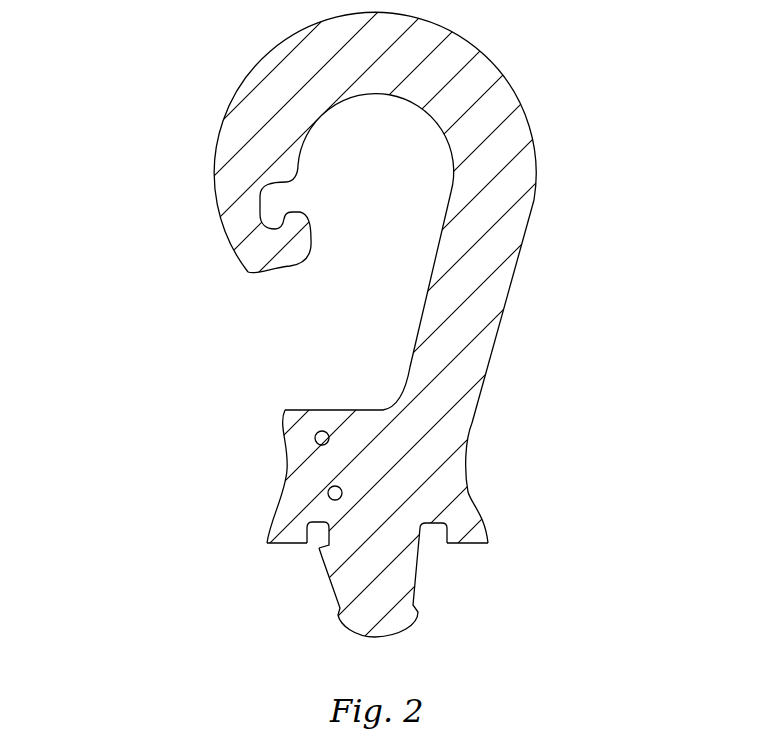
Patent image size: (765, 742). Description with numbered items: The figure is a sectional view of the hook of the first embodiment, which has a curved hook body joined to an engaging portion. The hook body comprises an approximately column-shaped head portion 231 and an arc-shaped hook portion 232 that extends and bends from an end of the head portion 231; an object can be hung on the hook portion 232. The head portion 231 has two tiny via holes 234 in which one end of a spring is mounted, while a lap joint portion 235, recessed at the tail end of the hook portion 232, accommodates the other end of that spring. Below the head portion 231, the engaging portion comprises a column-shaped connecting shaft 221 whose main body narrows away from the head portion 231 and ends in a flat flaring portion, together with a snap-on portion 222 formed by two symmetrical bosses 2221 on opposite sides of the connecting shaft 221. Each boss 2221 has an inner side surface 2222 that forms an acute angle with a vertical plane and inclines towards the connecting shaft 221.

The lap joint portion 235 is at (267, 205).
The arc-shaped hook portion 232 is at (490, 247).
The head portion 231 is at (440, 438).
The via holes 234 is at (317, 435).
The snap-on portion 222 is at (273, 520).
The bosses 2221 is at (270, 542).
The inner side surface 2222 is at (325, 550).
The connecting shaft 221 is at (350, 620).